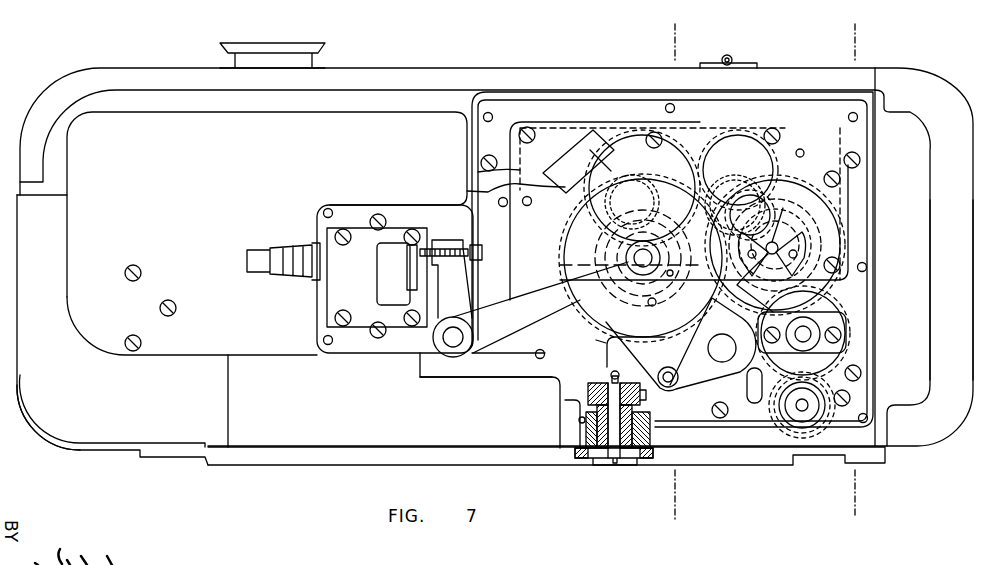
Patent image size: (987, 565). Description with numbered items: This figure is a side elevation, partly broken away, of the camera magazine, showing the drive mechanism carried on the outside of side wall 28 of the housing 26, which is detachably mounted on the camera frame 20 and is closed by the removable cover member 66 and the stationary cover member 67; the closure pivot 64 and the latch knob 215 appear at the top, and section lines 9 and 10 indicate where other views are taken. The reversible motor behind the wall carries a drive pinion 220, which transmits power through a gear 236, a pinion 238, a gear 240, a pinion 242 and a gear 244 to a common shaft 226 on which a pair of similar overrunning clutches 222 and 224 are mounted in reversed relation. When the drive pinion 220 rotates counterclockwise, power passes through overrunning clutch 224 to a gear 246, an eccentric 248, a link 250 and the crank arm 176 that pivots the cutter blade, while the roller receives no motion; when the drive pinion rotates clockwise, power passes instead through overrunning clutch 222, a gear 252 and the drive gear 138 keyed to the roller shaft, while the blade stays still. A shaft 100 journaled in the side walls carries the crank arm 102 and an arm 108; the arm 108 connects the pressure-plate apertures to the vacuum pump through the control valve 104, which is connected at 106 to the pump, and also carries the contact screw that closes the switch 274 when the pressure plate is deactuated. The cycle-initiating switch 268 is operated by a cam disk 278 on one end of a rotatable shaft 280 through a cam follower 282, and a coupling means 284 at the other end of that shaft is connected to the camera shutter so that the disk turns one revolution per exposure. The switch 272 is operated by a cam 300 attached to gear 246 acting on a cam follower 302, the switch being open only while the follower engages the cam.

The section line 9- 9 is at (855, 24).
The section line 10- 10 is at (675, 24).
The frame 20 is at (272, 455).
The housing 26 is at (125, 124).
The side wall 28 is at (199, 154).
The pivot 64 is at (730, 55).
The removable cover member 66 is at (939, 274).
The stationary cover member 67 is at (79, 402).
The shaft 100 is at (445, 348).
The crank arm 102 is at (484, 321).
The control valve 104 is at (334, 287).
The vacuum pump connection 106 is at (252, 250).
The arm 108 is at (456, 284).
The drive gear 138 is at (778, 415).
The crank arm 176 is at (684, 377).
The knob 215 is at (265, 47).
The drive pinion 220 is at (592, 175).
The overrunning clutch 222 is at (812, 248).
The overrunning clutch 224 is at (603, 127).
The shaft 226 is at (800, 294).
The gear 236 is at (648, 130).
The pinion 238 is at (632, 202).
The gear 240 is at (725, 135).
The pinion 242 is at (735, 195).
The gear 244 is at (825, 207).
The gear 246 is at (565, 253).
The eccentric 248 is at (643, 258).
The link 250 is at (634, 357).
The gear 252 is at (784, 369).
The switch 268 is at (610, 343).
The switch 272 is at (573, 146).
The switch 274 is at (391, 258).
The cam disk 278 is at (645, 395).
The rotatable shaft 280 is at (617, 442).
The cam follower 282 is at (616, 372).
The coupling means 284 is at (604, 462).
The cam 300 is at (467, 191).
The cam follower 302 is at (478, 172).